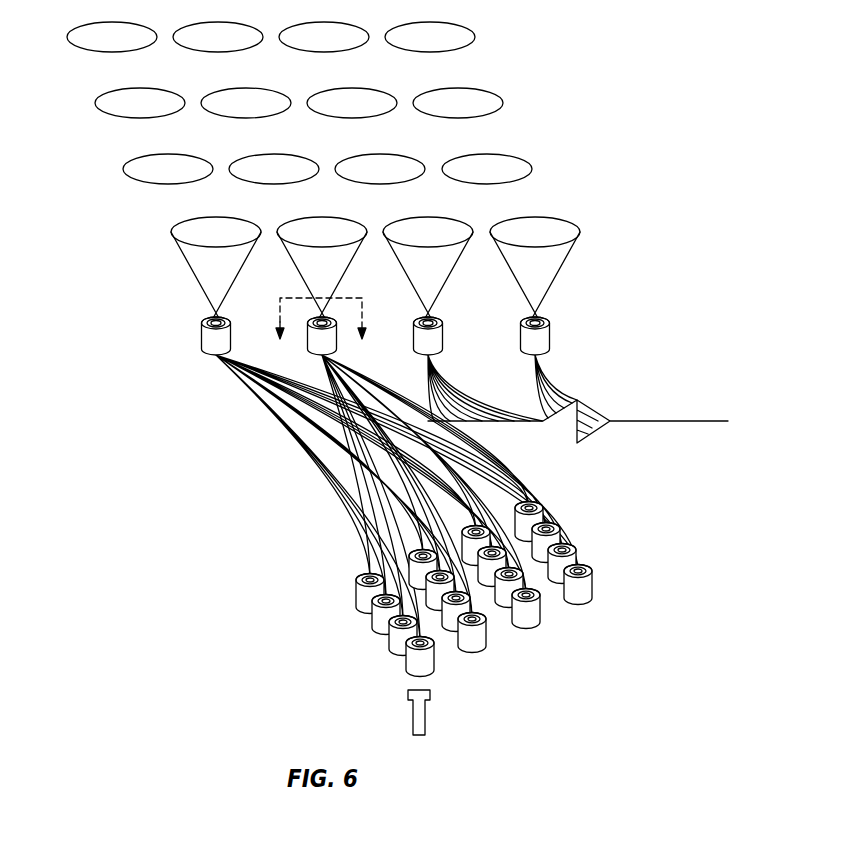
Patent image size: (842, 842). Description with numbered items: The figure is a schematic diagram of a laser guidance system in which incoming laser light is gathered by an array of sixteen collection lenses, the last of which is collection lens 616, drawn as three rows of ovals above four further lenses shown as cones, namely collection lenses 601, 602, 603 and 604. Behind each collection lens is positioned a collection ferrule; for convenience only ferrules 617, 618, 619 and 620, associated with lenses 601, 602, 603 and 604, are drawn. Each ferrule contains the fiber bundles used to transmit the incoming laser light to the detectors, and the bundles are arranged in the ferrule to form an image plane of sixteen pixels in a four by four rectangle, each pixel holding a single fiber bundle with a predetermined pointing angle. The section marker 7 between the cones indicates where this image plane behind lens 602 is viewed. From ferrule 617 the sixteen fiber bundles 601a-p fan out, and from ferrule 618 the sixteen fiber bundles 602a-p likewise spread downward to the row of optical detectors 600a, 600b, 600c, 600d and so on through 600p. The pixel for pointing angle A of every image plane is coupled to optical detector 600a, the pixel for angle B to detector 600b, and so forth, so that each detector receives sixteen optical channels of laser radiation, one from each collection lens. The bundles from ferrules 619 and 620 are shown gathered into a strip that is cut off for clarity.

The collection lens 616 is at (473, 36).
The collection lens 601 is at (178, 245).
The collection lens 602 is at (282, 240).
The collection lens 603 is at (390, 244).
The collection lens 604 is at (496, 243).
The collection ferrule 617 is at (214, 357).
The collection ferrule 618 is at (320, 357).
The collection ferrule 619 is at (426, 357).
The collection ferrule 620 is at (533, 357).
The fiber bundles 601a-p is at (312, 547).
The fiber bundles 602a-p is at (487, 428).
The optical detector 600a is at (435, 678).
The optical detector 600b is at (483, 652).
The optical detector 600c is at (535, 627).
The optical detector 600d is at (590, 600).
The optical detector 600p is at (612, 567).
The section marker for image plane view 7 is at (322, 334).